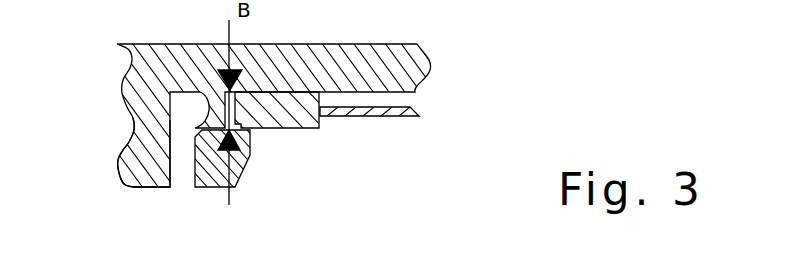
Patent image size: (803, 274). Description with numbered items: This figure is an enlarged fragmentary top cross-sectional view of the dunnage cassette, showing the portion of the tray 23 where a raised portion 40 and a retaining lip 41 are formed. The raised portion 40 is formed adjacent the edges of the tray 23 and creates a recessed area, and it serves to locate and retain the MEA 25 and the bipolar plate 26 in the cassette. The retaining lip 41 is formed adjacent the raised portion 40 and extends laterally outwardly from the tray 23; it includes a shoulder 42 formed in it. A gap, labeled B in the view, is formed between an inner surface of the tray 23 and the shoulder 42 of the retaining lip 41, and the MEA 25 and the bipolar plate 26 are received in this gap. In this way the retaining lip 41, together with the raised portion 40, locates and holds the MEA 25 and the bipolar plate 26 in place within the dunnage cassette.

The tray 23 is at (132, 52).
The raised portion 40 is at (150, 174).
The retaining lip 41 is at (250, 157).
The shoulder 42 is at (240, 128).
The MEA 25 is at (400, 114).
The bipolar plate 26 is at (374, 111).